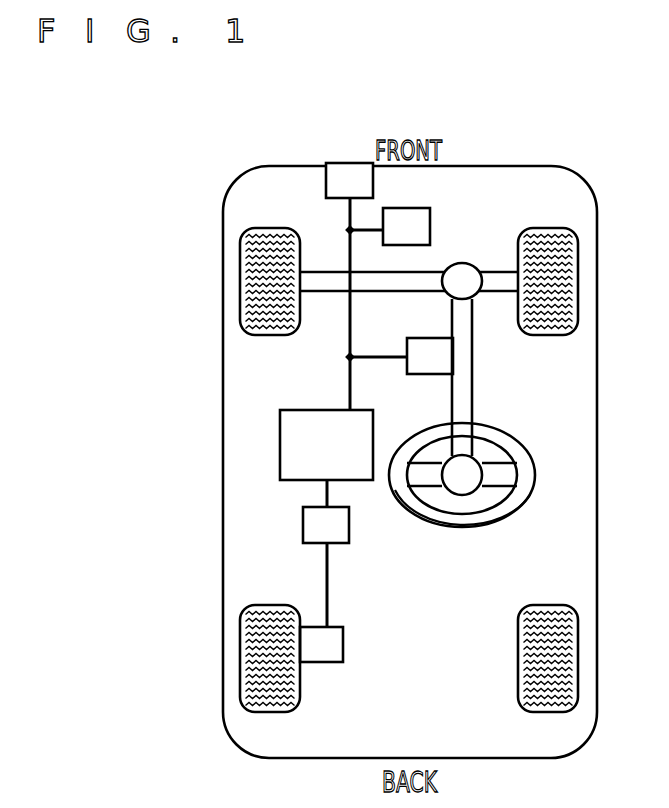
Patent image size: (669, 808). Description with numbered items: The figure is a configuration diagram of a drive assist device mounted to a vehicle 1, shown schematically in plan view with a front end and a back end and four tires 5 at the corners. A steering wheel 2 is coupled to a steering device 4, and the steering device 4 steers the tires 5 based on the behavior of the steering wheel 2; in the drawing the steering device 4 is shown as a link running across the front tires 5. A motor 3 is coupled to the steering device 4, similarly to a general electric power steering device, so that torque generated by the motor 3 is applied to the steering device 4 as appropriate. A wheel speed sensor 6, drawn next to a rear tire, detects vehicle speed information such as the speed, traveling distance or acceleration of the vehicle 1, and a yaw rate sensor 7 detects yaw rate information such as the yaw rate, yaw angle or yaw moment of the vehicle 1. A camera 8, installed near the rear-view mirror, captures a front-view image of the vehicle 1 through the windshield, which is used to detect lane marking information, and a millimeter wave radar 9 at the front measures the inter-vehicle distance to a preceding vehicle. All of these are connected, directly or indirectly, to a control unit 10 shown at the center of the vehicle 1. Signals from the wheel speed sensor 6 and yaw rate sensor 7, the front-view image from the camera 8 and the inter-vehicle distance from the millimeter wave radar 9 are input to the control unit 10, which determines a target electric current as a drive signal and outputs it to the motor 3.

The vehicle 1 is at (253, 503).
The steering wheel 2 is at (505, 433).
The motor 3 is at (425, 338).
The steering device 4 is at (408, 272).
The tires 5 is at (240, 285).
The wheel speed sensor 6 is at (335, 646).
The yaw rate sensor 7 is at (338, 528).
The camera 8 is at (430, 226).
The millimeter wave radar 9 is at (326, 190).
The control unit 10 is at (320, 410).